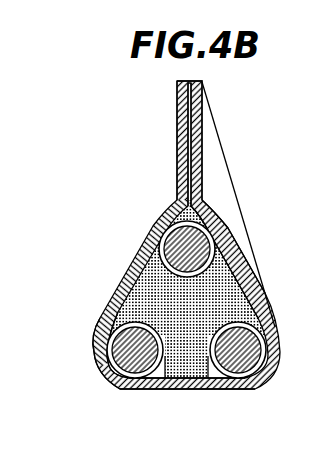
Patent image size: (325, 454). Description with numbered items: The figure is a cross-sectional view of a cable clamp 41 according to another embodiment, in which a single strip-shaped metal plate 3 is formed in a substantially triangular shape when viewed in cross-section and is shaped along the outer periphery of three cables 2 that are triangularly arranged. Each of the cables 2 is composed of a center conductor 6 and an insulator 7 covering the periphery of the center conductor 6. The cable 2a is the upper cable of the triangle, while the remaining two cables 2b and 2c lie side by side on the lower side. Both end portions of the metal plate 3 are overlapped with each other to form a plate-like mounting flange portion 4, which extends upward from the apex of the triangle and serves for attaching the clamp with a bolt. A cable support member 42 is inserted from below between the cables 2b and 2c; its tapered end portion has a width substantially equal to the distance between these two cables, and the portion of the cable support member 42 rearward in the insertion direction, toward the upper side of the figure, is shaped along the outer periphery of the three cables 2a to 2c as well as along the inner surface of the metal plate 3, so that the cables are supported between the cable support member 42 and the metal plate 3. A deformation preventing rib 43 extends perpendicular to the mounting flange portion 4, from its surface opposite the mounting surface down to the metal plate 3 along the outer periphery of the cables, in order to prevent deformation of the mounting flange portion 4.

The cable clamp 41 is at (79, 77).
The mounting flange portion 4 is at (176, 117).
The deformation preventing rib 43 is at (237, 205).
The metal plate 3 is at (238, 252).
The cables 2 is at (157, 222).
The cable 2a is at (158, 248).
The cable 2b is at (133, 390).
The cable 2c is at (237, 390).
The center conductor 6 is at (103, 343).
The insulator 7 is at (99, 366).
The cable support member 42 is at (186, 390).